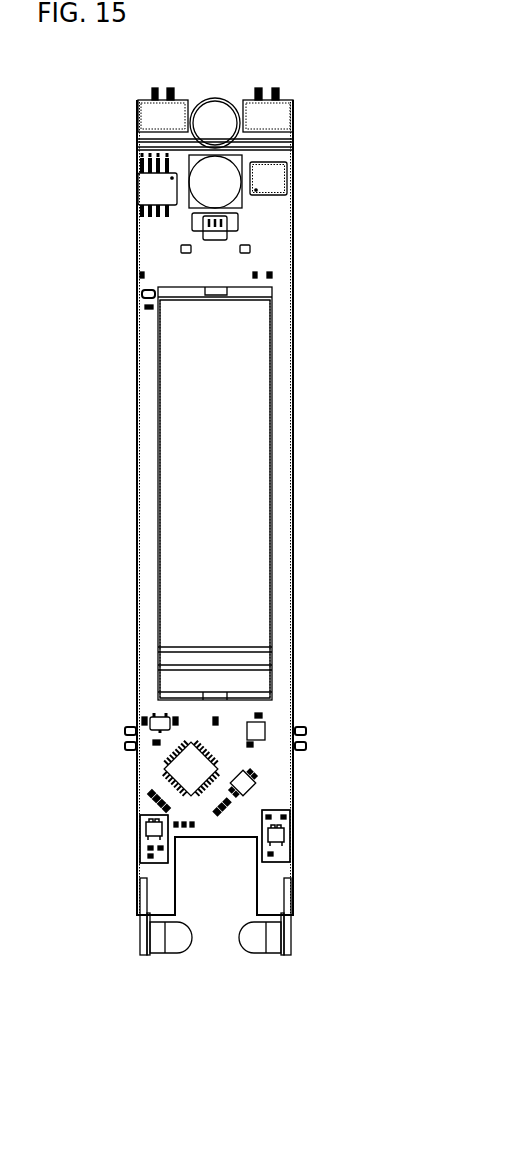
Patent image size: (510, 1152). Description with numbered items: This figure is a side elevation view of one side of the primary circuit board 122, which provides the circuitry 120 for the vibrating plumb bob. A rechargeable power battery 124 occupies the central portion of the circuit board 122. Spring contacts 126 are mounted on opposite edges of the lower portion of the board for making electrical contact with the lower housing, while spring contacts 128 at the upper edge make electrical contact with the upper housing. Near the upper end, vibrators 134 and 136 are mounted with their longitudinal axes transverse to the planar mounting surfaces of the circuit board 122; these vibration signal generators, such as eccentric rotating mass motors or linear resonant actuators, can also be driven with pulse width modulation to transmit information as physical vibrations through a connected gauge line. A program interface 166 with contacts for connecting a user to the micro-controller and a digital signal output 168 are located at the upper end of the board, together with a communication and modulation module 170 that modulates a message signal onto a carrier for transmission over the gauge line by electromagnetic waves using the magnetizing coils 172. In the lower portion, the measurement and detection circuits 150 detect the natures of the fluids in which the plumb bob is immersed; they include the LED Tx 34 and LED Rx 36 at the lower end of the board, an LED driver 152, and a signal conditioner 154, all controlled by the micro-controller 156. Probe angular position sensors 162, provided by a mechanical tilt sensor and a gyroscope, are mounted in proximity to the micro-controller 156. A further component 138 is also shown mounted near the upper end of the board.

The LED Tx 34 is at (186, 938).
The LED Rx 36 is at (248, 940).
The circuitry 120 is at (135, 358).
The primary circuit board 122 is at (280, 435).
The rechargeable power battery 124 is at (233, 516).
The spring contacts 126 is at (131, 725).
The spring contacts 128 is at (151, 93).
The vibrator 134 is at (205, 128).
The vibrator 136 is at (220, 192).
The memory chip 138 is at (153, 192).
The measurement and detection circuits 150 is at (289, 820).
The LED driver 152 is at (280, 850).
The signal conditioner 154 is at (150, 840).
The micro-controller 156 is at (182, 773).
The probe angular position sensors 162 is at (261, 727).
The program interface 166 is at (268, 118).
The digital signal output 168 is at (160, 117).
The communication and modulation module 170 is at (272, 178).
The magnetizing coils 172 is at (293, 139).